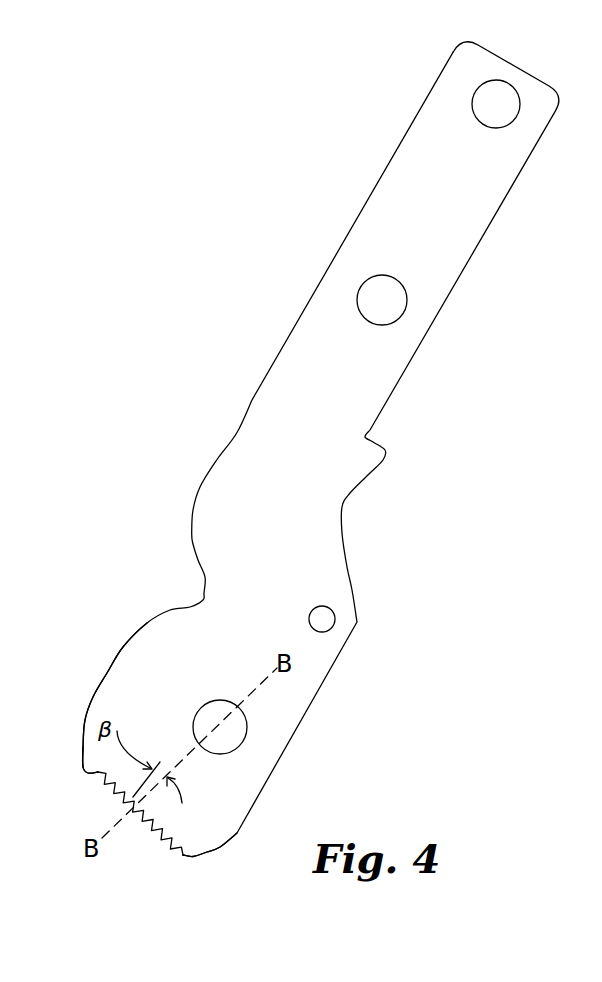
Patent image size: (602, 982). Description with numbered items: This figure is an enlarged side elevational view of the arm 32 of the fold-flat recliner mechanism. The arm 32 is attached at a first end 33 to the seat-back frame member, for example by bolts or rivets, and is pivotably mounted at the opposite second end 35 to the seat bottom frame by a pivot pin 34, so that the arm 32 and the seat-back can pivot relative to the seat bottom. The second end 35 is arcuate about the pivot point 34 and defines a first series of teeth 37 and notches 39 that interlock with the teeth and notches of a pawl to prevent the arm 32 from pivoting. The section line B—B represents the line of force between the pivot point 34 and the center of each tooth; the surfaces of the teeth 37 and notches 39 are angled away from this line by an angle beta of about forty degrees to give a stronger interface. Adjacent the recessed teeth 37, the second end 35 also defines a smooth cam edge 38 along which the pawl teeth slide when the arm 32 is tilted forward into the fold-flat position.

The arm 32 is at (370, 388).
The first end 33 is at (497, 172).
The pivot pin 34 is at (233, 732).
The second end 35 is at (222, 787).
The teeth 37 is at (110, 800).
The smooth cam edge 38 is at (82, 755).
The notches 39 is at (100, 773).